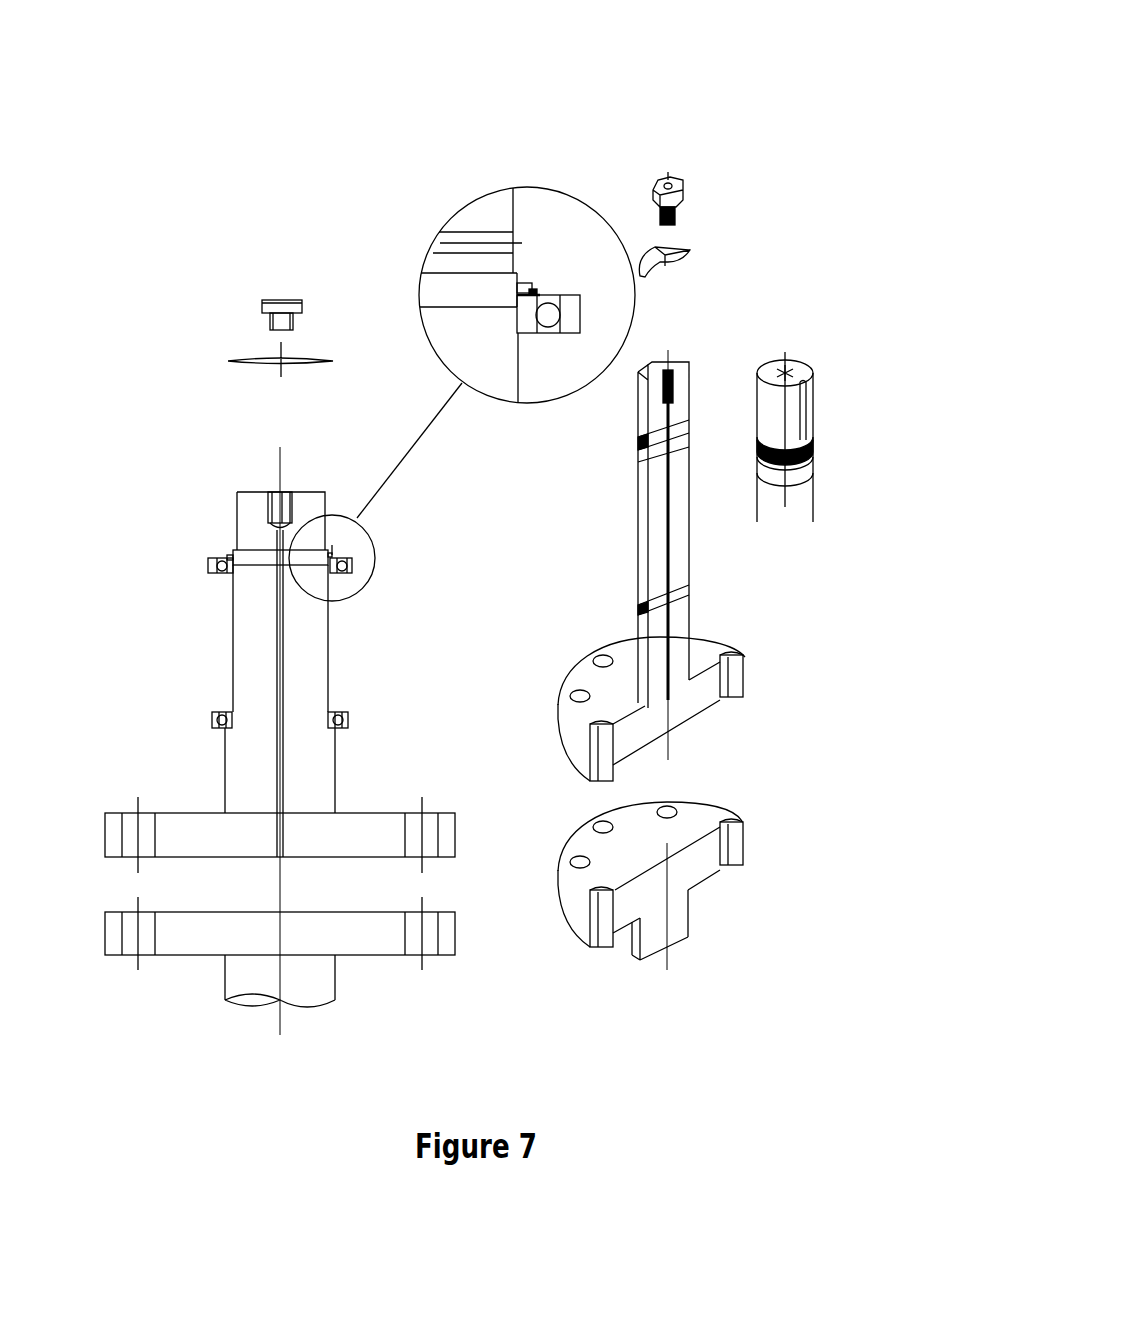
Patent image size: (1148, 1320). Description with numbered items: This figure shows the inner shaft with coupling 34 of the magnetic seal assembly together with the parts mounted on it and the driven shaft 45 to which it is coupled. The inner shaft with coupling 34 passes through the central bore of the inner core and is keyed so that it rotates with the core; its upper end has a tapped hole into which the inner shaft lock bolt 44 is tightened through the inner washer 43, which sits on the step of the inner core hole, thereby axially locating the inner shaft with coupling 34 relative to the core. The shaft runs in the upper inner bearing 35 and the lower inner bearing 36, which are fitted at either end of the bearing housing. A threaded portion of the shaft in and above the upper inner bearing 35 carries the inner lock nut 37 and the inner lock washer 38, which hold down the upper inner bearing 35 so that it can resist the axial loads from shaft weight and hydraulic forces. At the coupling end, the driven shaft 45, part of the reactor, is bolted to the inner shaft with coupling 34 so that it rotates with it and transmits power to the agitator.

The inner shaft with coupling 34 is at (335, 777).
The upper inner bearing 35 is at (352, 572).
The lower inner bearing 36 is at (348, 712).
The inner lock nut 37 is at (525, 285).
The inner lock washer 38 is at (536, 292).
The inner washer 43 is at (228, 361).
The inner shaft lock bolt 44 is at (262, 307).
The driven shaft 45 is at (335, 977).